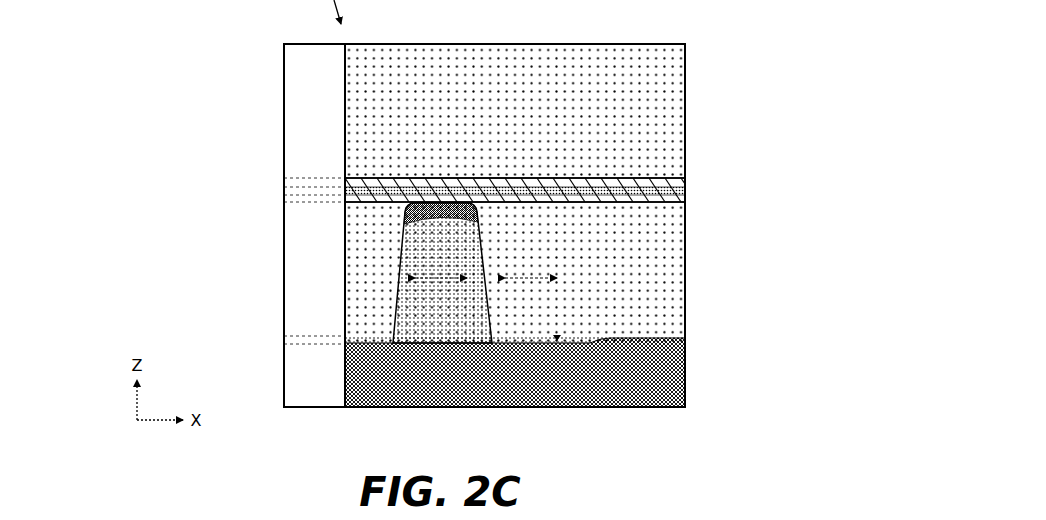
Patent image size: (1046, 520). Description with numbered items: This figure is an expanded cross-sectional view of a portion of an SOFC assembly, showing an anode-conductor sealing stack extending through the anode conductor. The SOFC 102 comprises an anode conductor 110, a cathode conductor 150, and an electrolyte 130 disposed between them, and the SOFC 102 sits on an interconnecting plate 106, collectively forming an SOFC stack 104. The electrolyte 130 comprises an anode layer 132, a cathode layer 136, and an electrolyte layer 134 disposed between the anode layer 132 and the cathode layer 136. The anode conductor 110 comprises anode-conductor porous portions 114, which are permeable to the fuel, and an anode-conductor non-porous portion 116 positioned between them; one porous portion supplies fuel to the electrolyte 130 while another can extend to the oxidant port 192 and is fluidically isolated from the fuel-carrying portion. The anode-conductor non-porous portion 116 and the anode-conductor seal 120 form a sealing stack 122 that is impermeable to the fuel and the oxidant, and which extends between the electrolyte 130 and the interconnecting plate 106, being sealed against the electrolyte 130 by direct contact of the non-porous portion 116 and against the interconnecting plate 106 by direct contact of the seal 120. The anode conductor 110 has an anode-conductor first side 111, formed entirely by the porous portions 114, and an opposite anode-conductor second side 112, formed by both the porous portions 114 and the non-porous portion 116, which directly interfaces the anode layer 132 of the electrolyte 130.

The SOFC 102 is at (164, 38).
The SOFC stack 104 is at (88, 43).
The interconnecting plate 106 is at (640, 407).
The anode conductor 110 is at (263, 202).
The anode-conductor first side 111 is at (688, 368).
The anode-conductor second side 112 is at (545, 185).
The anode-conductor porous portion 114 is at (567, 267).
The anode-conductor non-porous portion 116 is at (480, 218).
The anode-conductor seal 120 is at (492, 315).
The sealing stack 122 is at (383, 267).
The electrolyte 130 is at (263, 176).
The anode layer 132 is at (688, 196).
The electrolyte layer 134 is at (683, 165).
The cathode layer 136 is at (658, 170).
The cathode conductor 150 is at (263, 45).
The oxidant port 192 is at (320, 78).